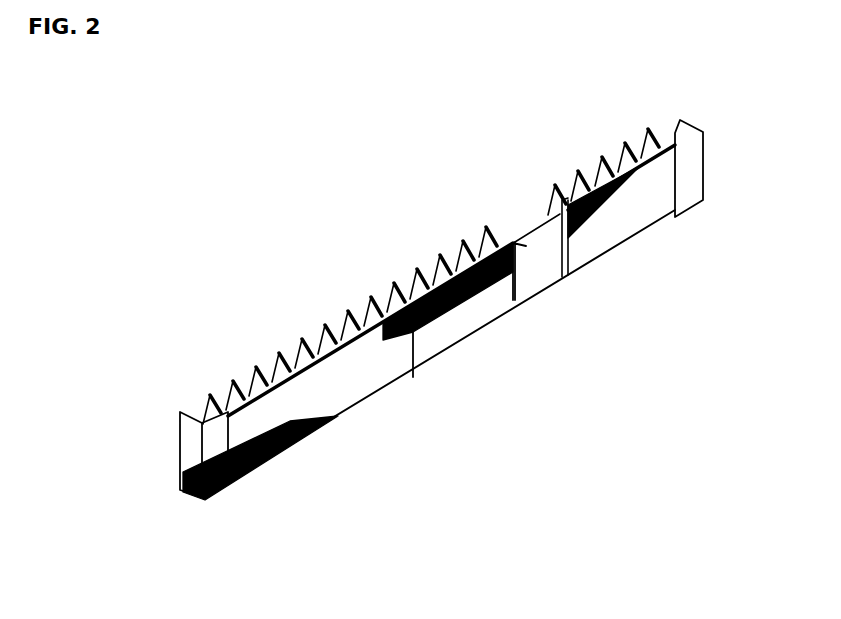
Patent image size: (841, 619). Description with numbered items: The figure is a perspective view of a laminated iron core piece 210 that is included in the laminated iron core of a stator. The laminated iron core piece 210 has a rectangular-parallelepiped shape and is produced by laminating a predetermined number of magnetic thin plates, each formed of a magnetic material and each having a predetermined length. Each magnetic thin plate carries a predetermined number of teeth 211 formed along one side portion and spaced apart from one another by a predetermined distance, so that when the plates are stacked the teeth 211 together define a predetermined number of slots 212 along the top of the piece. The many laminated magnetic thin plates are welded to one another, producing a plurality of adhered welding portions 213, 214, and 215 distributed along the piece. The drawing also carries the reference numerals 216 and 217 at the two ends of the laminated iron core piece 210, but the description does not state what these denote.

The laminated iron core piece 210 is at (447, 193).
The teeth 211 is at (293, 340).
The slots 212 is at (333, 328).
The adhered welding portion 213 is at (245, 472).
The adhered welding portion 214 is at (413, 357).
The adhered welding portion 215 is at (668, 200).
The left end block 216 is at (192, 462).
The right end block 217 is at (703, 163).